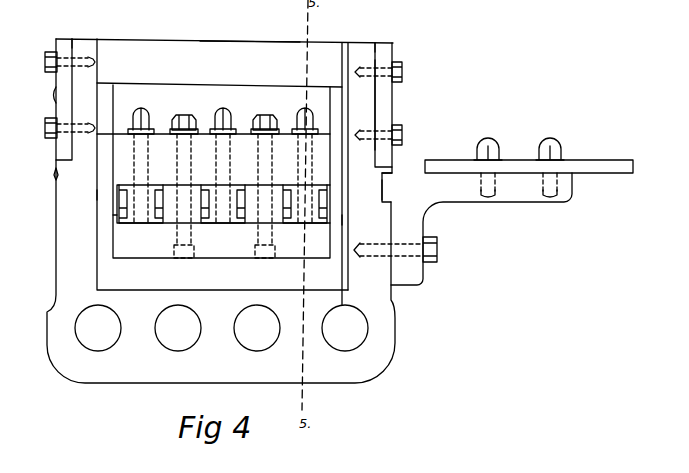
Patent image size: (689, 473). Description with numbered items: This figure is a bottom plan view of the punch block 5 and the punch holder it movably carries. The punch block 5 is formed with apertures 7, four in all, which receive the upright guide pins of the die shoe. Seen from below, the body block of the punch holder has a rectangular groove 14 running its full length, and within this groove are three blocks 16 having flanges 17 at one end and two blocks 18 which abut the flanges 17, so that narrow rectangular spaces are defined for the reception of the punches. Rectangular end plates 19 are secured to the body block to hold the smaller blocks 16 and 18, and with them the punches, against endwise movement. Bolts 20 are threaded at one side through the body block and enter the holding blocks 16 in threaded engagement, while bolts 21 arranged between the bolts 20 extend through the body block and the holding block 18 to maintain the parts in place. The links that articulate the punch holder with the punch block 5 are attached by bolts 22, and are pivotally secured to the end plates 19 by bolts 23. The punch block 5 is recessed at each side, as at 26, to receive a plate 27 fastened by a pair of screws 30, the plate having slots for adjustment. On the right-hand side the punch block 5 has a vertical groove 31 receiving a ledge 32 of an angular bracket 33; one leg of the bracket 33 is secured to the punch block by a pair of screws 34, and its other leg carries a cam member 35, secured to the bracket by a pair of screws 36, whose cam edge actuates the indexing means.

The punch block 5 is at (247, 51).
The apertures 7 is at (162, 366).
The rectangular groove 14 is at (165, 222).
The blocks 16 is at (127, 217).
The flanges 17 is at (115, 217).
The blocks 18 is at (168, 193).
The rectangular end plates 19 is at (103, 195).
The bolts 20 is at (146, 113).
The bolts 21 is at (183, 115).
The bolts 22 is at (55, 97).
The bolts 23 is at (54, 176).
The recess 26 is at (76, 49).
The plate 27 is at (387, 90).
The screws 30 is at (402, 69).
The vertical groove 31 is at (391, 175).
The ledge 32 is at (385, 189).
The angular bracket 33 is at (458, 198).
The screws 34 is at (437, 250).
The cam member 35 is at (585, 167).
The screws 36 is at (543, 152).